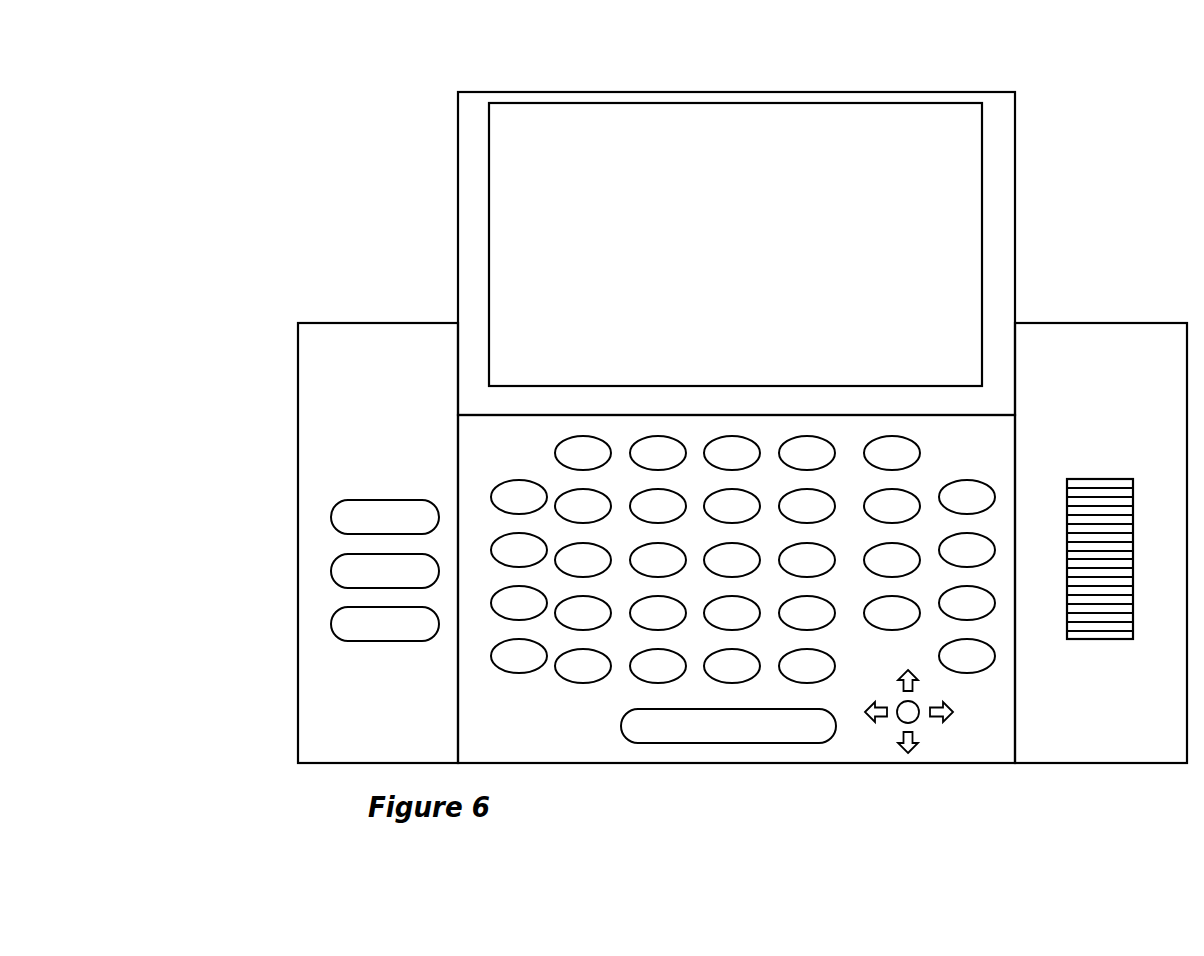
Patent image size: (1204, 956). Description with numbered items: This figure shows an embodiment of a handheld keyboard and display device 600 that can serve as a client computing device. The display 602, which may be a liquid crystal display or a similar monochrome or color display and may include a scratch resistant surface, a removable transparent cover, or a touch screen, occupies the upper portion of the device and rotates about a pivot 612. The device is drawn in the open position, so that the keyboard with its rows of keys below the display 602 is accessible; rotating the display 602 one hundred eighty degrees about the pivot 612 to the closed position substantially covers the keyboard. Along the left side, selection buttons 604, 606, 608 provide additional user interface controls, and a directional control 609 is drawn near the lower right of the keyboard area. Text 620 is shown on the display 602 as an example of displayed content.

The mobile computing device 600 is at (380, 94).
The display 602 is at (768, 102).
The keys 604 is at (332, 519).
The key 606 is at (332, 573).
The key 608 is at (332, 626).
The navigation control 609 is at (930, 732).
The side housing panel 612 is at (397, 323).
The displayed text 620 is at (542, 123).